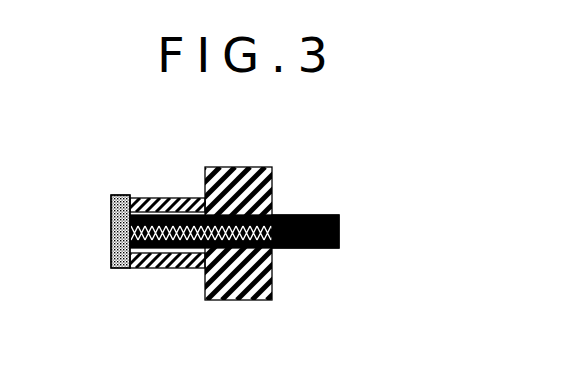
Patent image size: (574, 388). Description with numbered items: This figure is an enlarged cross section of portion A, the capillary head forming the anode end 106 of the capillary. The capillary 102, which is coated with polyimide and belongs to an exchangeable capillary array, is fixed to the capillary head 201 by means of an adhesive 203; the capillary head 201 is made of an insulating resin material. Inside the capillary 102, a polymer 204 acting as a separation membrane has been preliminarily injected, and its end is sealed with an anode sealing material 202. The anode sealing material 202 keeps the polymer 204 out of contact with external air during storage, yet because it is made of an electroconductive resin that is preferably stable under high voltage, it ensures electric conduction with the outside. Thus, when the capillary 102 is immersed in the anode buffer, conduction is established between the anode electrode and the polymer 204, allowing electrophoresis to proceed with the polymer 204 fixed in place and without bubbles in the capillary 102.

The anode end 106 is at (247, 217).
The capillary head 201 is at (235, 167).
The anode sealing material 202 is at (117, 195).
The adhesive 203 is at (166, 198).
The capillary 102 is at (311, 215).
The polymer 204 is at (339, 232).